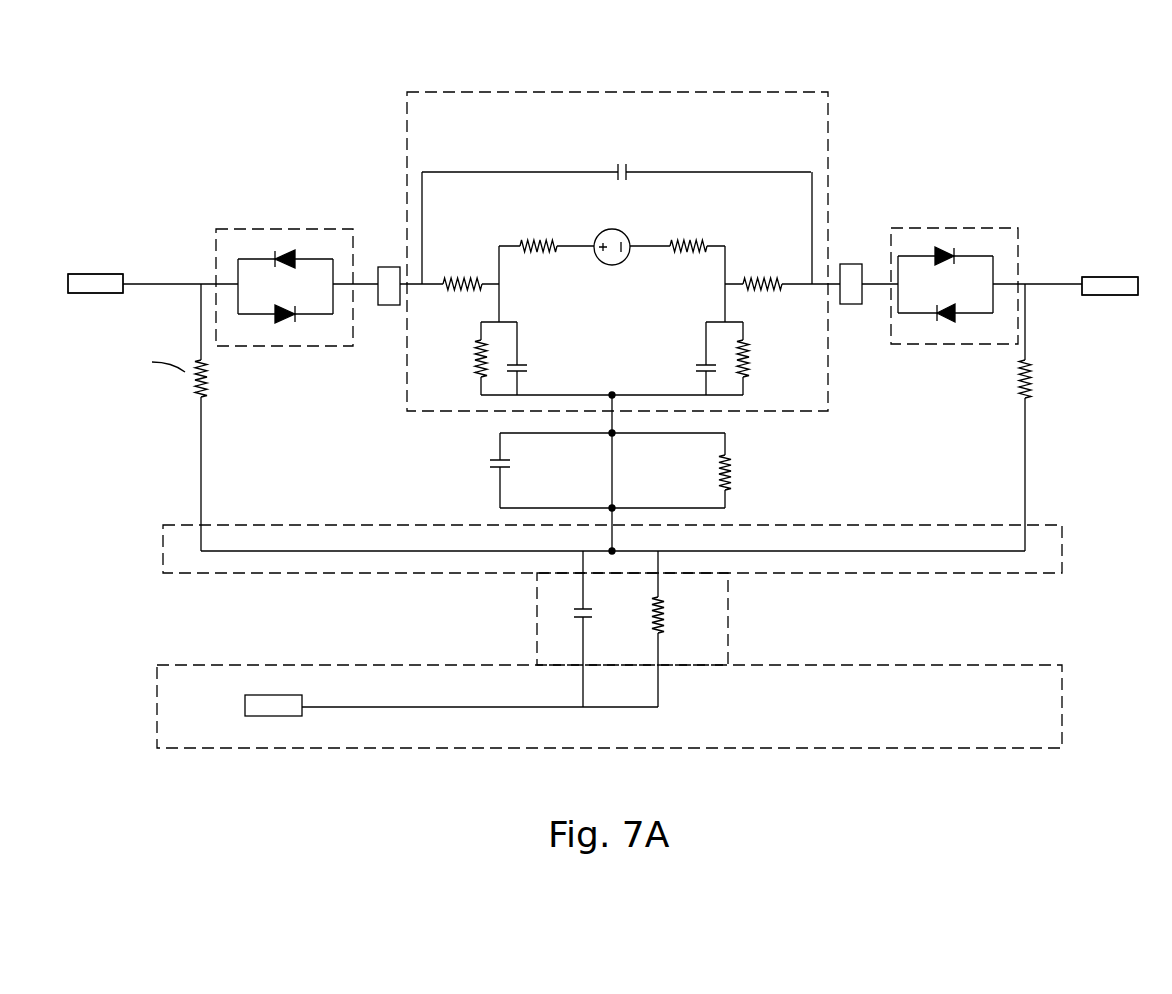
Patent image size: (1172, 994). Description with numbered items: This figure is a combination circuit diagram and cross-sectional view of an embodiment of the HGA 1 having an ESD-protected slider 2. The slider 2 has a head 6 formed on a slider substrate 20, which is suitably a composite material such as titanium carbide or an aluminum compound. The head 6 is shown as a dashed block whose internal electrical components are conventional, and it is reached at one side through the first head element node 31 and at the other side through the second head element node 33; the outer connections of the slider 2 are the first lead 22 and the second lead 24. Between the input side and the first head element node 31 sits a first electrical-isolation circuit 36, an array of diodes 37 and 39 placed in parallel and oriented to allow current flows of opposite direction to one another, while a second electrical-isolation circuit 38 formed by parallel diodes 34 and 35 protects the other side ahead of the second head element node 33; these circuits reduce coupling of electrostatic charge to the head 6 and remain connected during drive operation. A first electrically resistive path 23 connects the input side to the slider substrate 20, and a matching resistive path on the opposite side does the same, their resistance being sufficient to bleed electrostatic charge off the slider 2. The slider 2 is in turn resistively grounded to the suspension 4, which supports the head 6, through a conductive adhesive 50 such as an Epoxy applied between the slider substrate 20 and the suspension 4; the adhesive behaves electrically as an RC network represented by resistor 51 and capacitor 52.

The HGA 1 is at (1063, 177).
The slider 2 is at (148, 125).
The suspension 4 is at (147, 706).
The head 6 is at (660, 90).
The slider substrate 20 is at (143, 541).
The first lead 22 is at (1104, 276).
The first electrically resistive path 23 is at (1045, 377).
The second lead 24 is at (103, 272).
The first head element node 31 is at (852, 264).
The second head element node 33 is at (386, 267).
The diode 34 is at (298, 252).
The diode 35 is at (298, 320).
The first electrical-isolation circuit 36 is at (947, 228).
The diode 37 is at (960, 252).
The second electrical-isolation circuit 38 is at (283, 228).
The diode 39 is at (963, 320).
The conductive adhesive 50 is at (530, 623).
The resistor 51 is at (672, 612).
The capacitor 52 is at (567, 612).